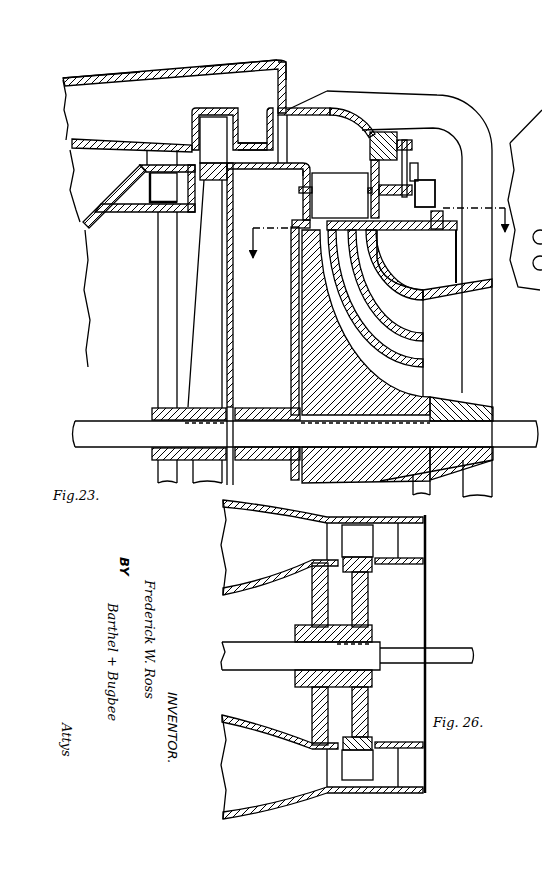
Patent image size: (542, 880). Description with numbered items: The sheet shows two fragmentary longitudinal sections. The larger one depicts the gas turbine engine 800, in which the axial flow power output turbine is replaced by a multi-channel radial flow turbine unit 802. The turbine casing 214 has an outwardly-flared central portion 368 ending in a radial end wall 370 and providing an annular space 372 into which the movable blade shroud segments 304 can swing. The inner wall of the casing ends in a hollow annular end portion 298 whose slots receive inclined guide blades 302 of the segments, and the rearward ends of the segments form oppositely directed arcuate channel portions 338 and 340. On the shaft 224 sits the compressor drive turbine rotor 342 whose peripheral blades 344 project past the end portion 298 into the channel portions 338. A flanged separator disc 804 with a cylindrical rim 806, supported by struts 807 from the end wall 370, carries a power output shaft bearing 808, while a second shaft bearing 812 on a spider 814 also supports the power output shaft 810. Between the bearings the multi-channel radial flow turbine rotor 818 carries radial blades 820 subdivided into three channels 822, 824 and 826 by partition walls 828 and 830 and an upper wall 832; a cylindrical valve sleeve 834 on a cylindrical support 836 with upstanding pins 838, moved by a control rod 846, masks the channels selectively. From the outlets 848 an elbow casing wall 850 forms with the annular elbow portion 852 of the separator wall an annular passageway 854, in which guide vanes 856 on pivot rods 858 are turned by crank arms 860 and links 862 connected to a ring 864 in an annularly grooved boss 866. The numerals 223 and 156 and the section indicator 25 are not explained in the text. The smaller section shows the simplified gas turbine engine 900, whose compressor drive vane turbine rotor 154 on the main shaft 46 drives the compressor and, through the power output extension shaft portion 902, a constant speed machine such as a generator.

In FIG. 23, the turbine casing 214 is at (137, 67).
In FIG. 23, the annular space 372 is at (95, 80).
In FIG. 23, the outwardly-flared central portion 368 is at (233, 62).
In FIG. 23, the radial end wall 370 is at (292, 63).
In FIG. 23, the movable blade shroud segments 304 is at (99, 141).
In FIG. 23, the arcuate channel portions 338 is at (207, 108).
In FIG. 23, the arcuate channel portions 340 is at (253, 140).
In FIG. 23, the axial flow peripheral blades 344 is at (208, 133).
In FIG. 23, the hollow annular end portion 298 is at (150, 214).
In FIG. 23, the inclined guide blades 302 is at (157, 183).
In FIG. 23, the compressor drive turbine rotor 342 is at (207, 300).
In FIG. 23, the flange 223 is at (165, 385).
In FIG. 23, the shaft 224 is at (103, 428).
In FIG. 23, the cylindrical annular flange or rim 806 is at (236, 188).
In FIG. 23, the annular elbow portion 852 is at (303, 177).
In FIG. 23, the pivot rods 858 is at (302, 203).
In FIG. 23, the struts 807 is at (315, 163).
In FIG. 23, the section line 25 is at (382, 243).
In FIG. 23, the outlets 848 is at (288, 126).
In FIG. 23, the elbow casing wall 850 is at (357, 121).
In FIG. 23, the gas turbine engine 800 is at (293, 78).
In FIG. 23, the annular passageway 854 is at (323, 123).
In FIG. 23, the multi-channel radial flow turbine unit 802 is at (355, 107).
In FIG. 23, the spider 814 is at (433, 97).
In FIG. 23, the annularly grooved boss 866 is at (372, 147).
In FIG. 23, the guide vanes 856 is at (352, 180).
In FIG. 23, the cylindrical valve sleeve 834 is at (355, 221).
In FIG. 23, the ring 864 is at (412, 145).
In FIG. 23, the links 862 is at (408, 158).
In FIG. 23, the crank arms 860 is at (419, 171).
In FIG. 23, the control rod 846 is at (437, 183).
In FIG. 23, the upstanding pins 838 is at (443, 212).
In FIG. 23, the cylindrical support 836 is at (398, 233).
In FIG. 23, the upper wall 832 is at (423, 301).
In FIG. 23, the partition wall 830 is at (423, 337).
In FIG. 23, the partition wall 828 is at (423, 365).
In FIG. 23, the channel 826 is at (413, 318).
In FIG. 23, the channel 824 is at (413, 350).
In FIG. 23, the channel 822 is at (413, 380).
In FIG. 23, the flanged separator disc 804 is at (291, 338).
In FIG. 23, the power output shaft bearing 808 is at (257, 408).
In FIG. 23, the second shaft bearing 812 is at (473, 410).
In FIG. 23, the power output shaft 810 is at (508, 440).
In FIG. 23, the multi-channel radial flow turbine rotor 818 is at (422, 493).
In FIG. 23, the radial blades 820 is at (375, 365).
In FIG. 26, the gas turbine engine 900 is at (328, 513).
In FIG. 26, the nut 156 is at (360, 548).
In FIG. 26, the compressor drive vane turbine rotor 154 is at (360, 598).
In FIG. 26, the main shaft 46 is at (250, 647).
In FIG. 26, the power output extension shaft portion 902 is at (435, 648).